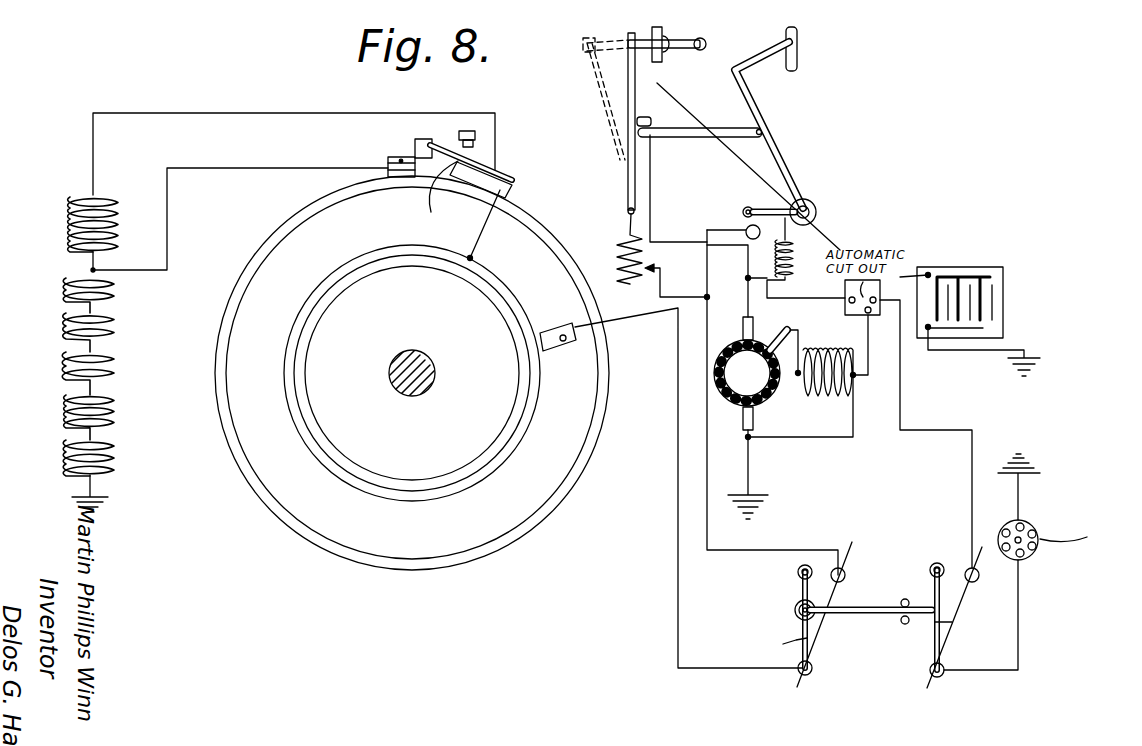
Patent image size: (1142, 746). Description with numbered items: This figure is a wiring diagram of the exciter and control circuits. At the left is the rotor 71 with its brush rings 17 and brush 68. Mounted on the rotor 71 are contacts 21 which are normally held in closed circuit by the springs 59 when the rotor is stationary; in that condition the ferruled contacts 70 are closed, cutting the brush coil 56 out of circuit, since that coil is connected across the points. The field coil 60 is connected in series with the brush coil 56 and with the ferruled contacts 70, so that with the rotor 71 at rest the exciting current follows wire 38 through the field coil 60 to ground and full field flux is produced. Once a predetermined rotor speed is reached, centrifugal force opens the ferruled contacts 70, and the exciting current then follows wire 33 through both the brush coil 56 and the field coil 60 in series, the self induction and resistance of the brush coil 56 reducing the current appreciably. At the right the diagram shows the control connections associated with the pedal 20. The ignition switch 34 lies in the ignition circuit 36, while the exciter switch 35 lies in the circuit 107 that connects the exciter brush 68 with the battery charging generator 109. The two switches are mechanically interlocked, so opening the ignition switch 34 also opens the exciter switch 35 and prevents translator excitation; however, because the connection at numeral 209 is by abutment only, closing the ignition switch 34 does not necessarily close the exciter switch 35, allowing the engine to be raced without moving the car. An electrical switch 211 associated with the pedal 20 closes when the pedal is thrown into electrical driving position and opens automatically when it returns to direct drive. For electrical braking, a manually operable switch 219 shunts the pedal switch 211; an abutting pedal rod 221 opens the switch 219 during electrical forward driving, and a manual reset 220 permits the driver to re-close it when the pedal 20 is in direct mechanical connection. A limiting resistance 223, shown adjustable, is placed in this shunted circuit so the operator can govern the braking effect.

The wire 33 is at (245, 112).
The wire 38 is at (225, 168).
The brush coil 56 is at (70, 222).
The field coil 60 is at (66, 371).
The ferruled contacts 70 is at (410, 152).
The contacts 21 is at (407, 178).
The springs 59 is at (442, 193).
The rotor 71 is at (517, 243).
The brush rings 17 is at (528, 331).
The brush 68 is at (553, 352).
The manual reset 220 is at (689, 40).
The manually operable switch 219 is at (604, 117).
The abutting pedal rod 221 is at (680, 138).
The pedal 20 is at (783, 138).
The electrical switch 211 is at (745, 218).
The limiting resistance 223 is at (619, 263).
The circuit 107 is at (707, 295).
The battery charging generator 109 is at (752, 384).
The exciter switch 35 is at (795, 588).
The ignition switch 34 is at (952, 568).
The abutment connection 209 is at (930, 622).
The ignition circuit 36 is at (1018, 595).